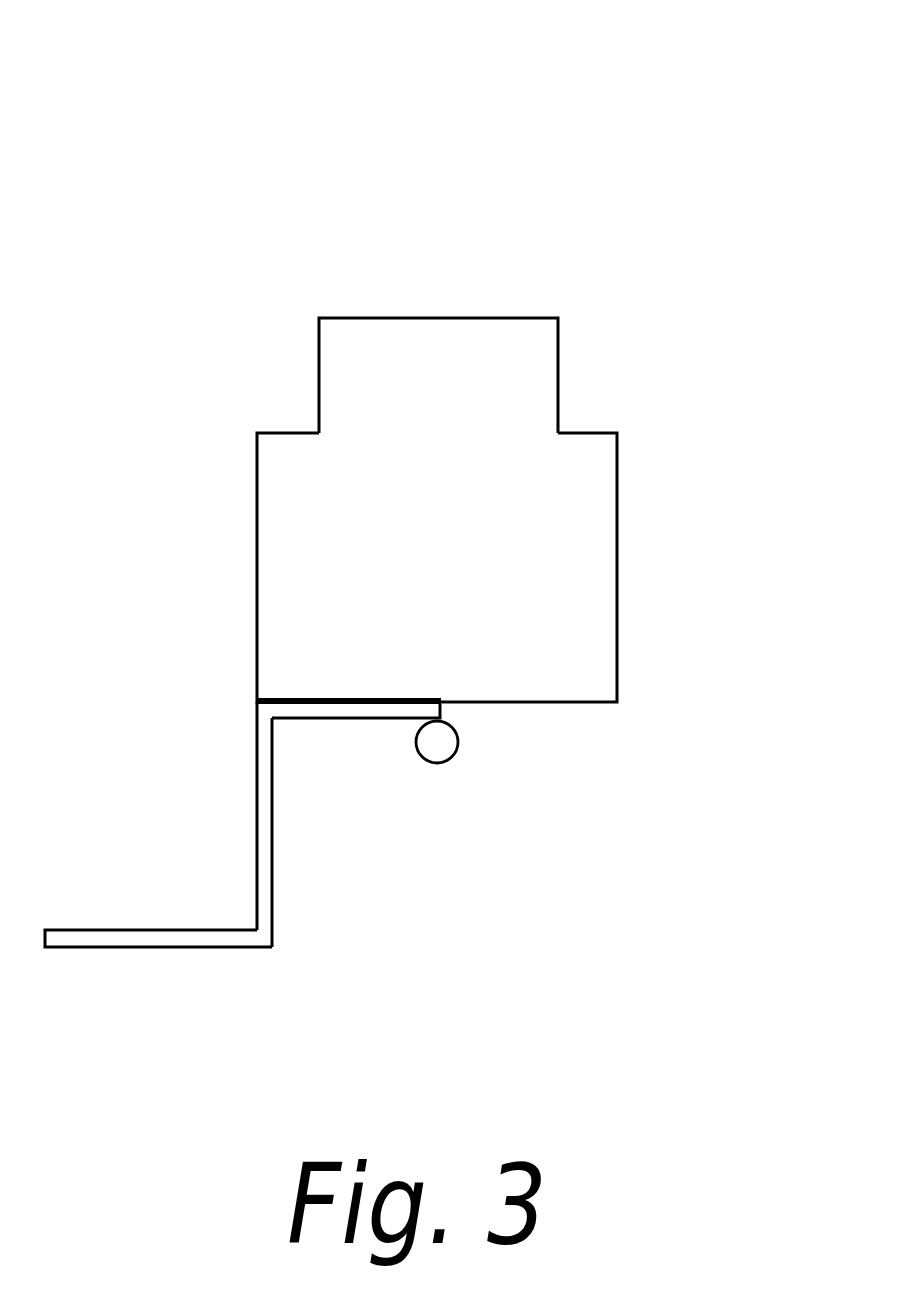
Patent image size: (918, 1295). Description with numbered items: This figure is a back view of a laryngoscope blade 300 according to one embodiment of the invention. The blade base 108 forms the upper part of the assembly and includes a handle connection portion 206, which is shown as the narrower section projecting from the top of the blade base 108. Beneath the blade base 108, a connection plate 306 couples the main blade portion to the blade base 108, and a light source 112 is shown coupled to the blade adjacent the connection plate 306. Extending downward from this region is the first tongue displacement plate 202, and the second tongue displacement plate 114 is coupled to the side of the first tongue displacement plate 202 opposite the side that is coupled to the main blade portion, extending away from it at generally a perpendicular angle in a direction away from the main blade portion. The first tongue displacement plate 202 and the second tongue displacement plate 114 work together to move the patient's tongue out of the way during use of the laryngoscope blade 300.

The laryngoscope blade 300 is at (632, 163).
The handle connection portion 206 is at (540, 385).
The blade base 108 is at (595, 578).
The connection plate 306 is at (333, 722).
The first tongue displacement plate 202 is at (273, 895).
The second tongue displacement plate 114 is at (147, 948).
The light source 112 is at (458, 742).